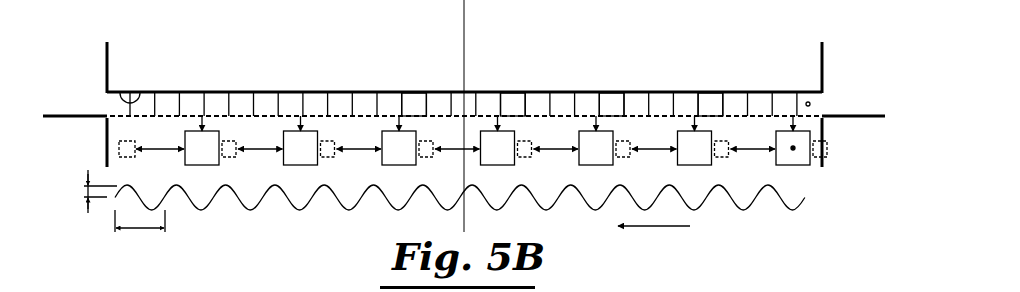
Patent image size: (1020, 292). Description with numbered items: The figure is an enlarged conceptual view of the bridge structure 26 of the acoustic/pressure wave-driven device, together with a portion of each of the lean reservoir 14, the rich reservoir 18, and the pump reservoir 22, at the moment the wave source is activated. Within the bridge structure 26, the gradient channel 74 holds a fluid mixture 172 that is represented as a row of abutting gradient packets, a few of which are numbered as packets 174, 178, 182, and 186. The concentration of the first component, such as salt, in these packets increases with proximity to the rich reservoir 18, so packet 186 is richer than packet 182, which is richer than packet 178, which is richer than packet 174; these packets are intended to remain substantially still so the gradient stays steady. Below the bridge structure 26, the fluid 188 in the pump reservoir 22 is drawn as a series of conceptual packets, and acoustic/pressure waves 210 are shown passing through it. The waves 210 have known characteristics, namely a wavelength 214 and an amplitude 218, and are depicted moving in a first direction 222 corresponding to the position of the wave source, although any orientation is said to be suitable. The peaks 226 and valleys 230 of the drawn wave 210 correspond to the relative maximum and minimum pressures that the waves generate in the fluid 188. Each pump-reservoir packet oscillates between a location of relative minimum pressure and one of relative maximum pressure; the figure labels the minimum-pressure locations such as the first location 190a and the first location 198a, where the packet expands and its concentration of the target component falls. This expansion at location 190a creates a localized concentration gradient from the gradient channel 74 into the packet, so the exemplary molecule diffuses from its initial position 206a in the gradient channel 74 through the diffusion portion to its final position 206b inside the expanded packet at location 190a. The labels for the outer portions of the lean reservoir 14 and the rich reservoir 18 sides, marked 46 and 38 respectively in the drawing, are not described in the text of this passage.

The lean reservoir 14 is at (857, 118).
The rich reservoir 18 is at (82, 118).
The pump reservoir 22 is at (826, 148).
The bridge structure 26 is at (287, 92).
The outlet 38 is at (860, 94).
The inlet 46 is at (90, 94).
The gradient channel 74 is at (131, 104).
The fluid mixture 172 is at (341, 104).
The gradient packet 174 is at (708, 100).
The gradient packet 178 is at (610, 100).
The gradient packet 182 is at (510, 100).
The gradient packet 186 is at (412, 100).
The fluid 188 is at (258, 182).
The first location of packet 190a is at (778, 163).
The first location of packet 198a is at (590, 158).
The initial position of molecule 206a is at (808, 101).
The final position of molecule 206b is at (793, 150).
The acoustic/pressure waves 210 is at (805, 200).
The wavelength 214 is at (140, 230).
The amplitude 218 is at (86, 187).
The first direction 222 is at (648, 227).
The peaks 226 is at (370, 184).
The valleys 230 is at (397, 210).